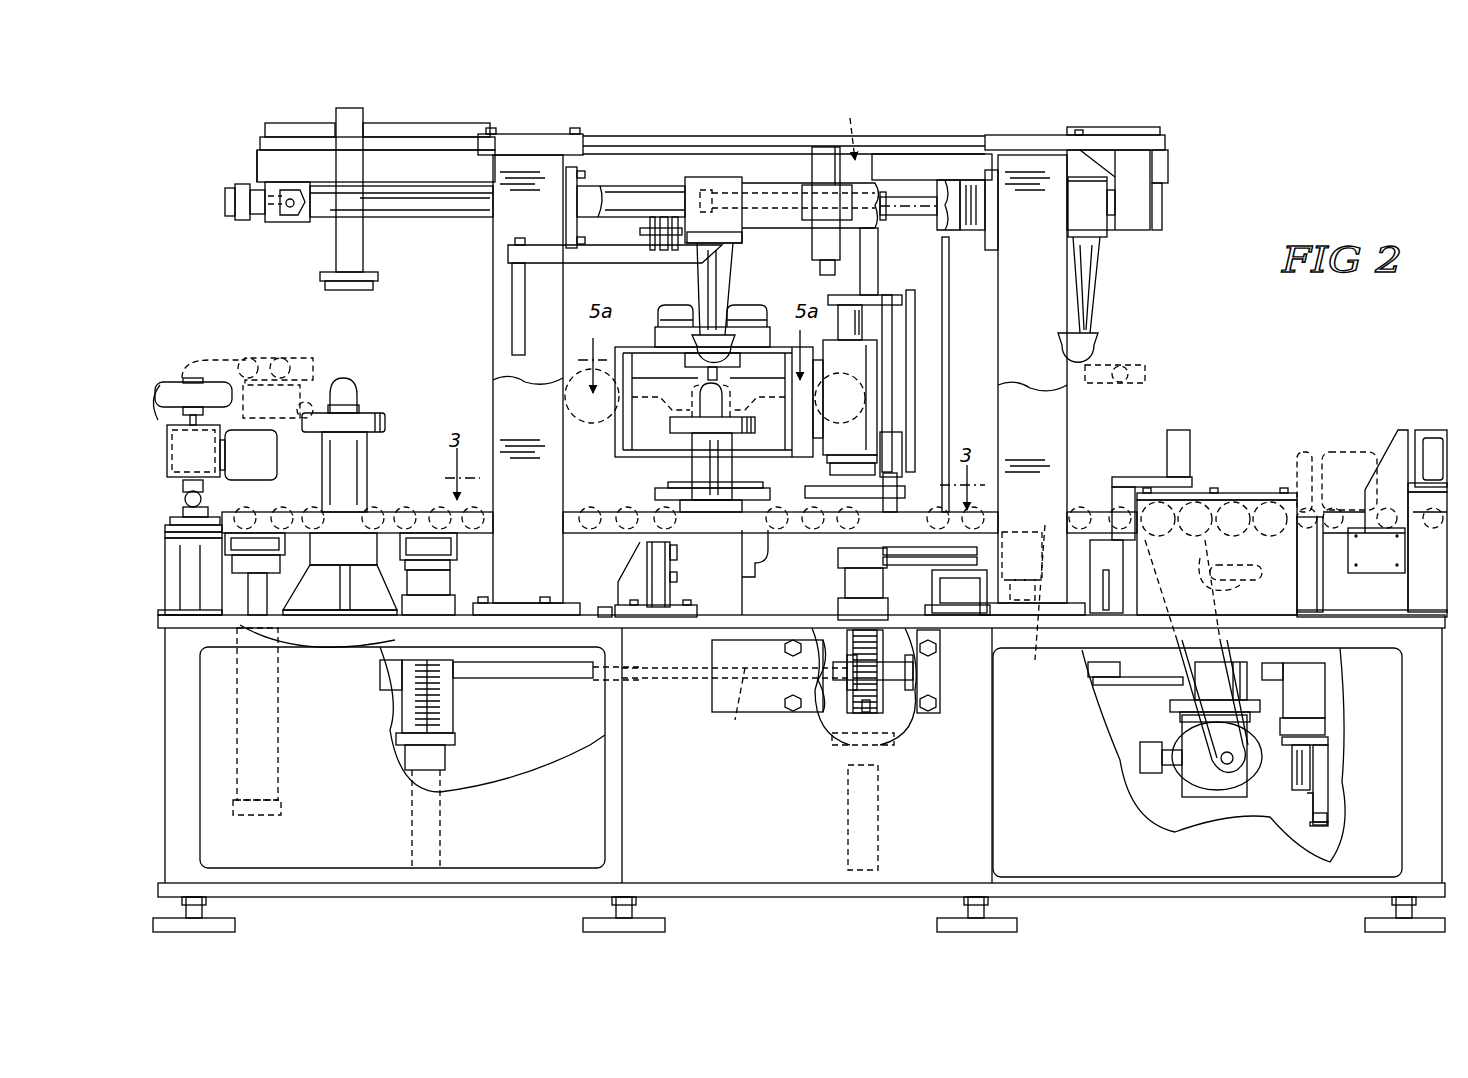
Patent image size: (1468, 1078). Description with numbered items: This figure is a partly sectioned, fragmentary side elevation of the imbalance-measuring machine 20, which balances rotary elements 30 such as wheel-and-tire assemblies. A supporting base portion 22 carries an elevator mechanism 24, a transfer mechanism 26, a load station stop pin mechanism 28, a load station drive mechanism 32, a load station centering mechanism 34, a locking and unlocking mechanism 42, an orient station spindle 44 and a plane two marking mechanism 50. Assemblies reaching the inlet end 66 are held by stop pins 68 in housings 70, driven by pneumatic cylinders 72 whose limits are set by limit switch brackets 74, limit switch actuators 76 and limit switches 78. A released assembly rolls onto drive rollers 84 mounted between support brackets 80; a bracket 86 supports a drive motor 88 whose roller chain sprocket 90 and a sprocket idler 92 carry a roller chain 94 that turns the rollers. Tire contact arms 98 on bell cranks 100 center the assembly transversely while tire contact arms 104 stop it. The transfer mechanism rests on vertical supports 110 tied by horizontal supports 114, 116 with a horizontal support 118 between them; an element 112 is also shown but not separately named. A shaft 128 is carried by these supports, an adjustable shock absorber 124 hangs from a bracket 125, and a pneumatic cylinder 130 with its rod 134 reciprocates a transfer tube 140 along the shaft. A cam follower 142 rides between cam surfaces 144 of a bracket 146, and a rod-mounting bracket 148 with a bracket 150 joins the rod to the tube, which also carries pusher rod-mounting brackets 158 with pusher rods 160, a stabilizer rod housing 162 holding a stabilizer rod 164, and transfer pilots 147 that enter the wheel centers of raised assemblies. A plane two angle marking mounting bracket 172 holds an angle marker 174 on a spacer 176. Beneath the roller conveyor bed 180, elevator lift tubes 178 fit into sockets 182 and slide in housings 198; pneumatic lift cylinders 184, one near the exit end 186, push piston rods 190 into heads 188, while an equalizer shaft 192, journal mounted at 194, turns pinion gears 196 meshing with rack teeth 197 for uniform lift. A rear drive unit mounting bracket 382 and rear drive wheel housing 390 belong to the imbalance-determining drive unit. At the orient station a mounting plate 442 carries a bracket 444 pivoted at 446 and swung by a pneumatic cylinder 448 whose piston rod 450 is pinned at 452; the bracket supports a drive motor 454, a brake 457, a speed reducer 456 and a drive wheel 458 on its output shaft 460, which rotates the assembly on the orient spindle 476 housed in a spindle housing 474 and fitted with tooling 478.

The imbalance-measuring machine 20 is at (1240, 143).
The supporting base portion 22 is at (712, 806).
The elevator mechanism 24 is at (537, 700).
The transfer mechanism 26 is at (872, 248).
The load station stop pin mechanism 28 is at (1295, 810).
The rotary elements 30 is at (605, 425).
The load station drive mechanism 32 is at (1152, 790).
The load station centering mechanism 34 is at (1096, 440).
The locking and unlocking mechanism 42 is at (730, 600).
The orient station spindle 44 is at (375, 368).
The plane two marking mechanism 50 is at (385, 243).
The inlet end 66 is at (1425, 492).
The stop pins 68 is at (1303, 452).
The housings 70 is at (1305, 597).
The pneumatic cylinders 72 is at (1320, 700).
The limit switch brackets 74 is at (1330, 798).
The limit switch actuators 76 is at (1307, 800).
The limit switches 78 is at (1322, 830).
The support bracket 80 is at (1190, 569).
The drive rollers 84 is at (1238, 508).
The bracket 86 is at (1195, 795).
The drive motor 88 is at (1180, 745).
The roller chain sprocket 90 is at (1228, 770).
The sprocket idler 92 is at (1225, 578).
The roller chain 94 is at (1175, 700).
The tire contact arms 98 is at (1187, 430).
The bell cranks 100 is at (1128, 477).
The tire contact arms 104 is at (902, 450).
The vertical supports 110 is at (538, 494).
The flange 112 is at (580, 195).
The entry end horizontal support 114 is at (1100, 127).
The exit end horizontal support 116 is at (535, 133).
The horizontal support 118 is at (780, 135).
The adjustable shock absorber 124 is at (245, 225).
The bracket 125 is at (405, 135).
The shaft 128 is at (455, 188).
The pneumatic cylinder 130 is at (922, 195).
The rod 134 is at (700, 178).
The transfer tube 140 is at (712, 176).
The cam follower 142 is at (975, 130).
The cam surfaces 144 is at (848, 128).
The bracket 146 is at (882, 150).
The transfer pilots 147 is at (718, 290).
The rod-mounting bracket 148 is at (655, 270).
The bracket 150 is at (640, 232).
The pusher rod-mounting brackets 158 is at (512, 250).
The pusher rods 160 is at (512, 318).
The stabilizer rod housing 162 is at (812, 212).
The stabilizer rod 164 is at (822, 270).
The plane two angle marking mounting bracket 172 is at (340, 112).
The plane two angle marker 174 is at (330, 255).
The angle marker spacer 176 is at (312, 210).
The elevator lift tubes 178 is at (455, 695).
The roller conveyor bed 180 is at (300, 358).
The socket 182 is at (470, 568).
The pneumatic lift cylinders 184 is at (275, 718).
The exit end 186 is at (243, 510).
The heads 188 is at (185, 560).
The piston rods 190 is at (240, 625).
The equalizer shaft 192 is at (580, 680).
The journal mount 194 is at (383, 677).
The pinion gears 196 is at (440, 708).
The rack teeth 197 is at (415, 720).
The housings 198 is at (450, 730).
The rear drive unit mounting bracket 382 is at (880, 355).
The rear drive wheel housing 390 is at (637, 348).
The mounting plate 442 is at (200, 538).
The bracket 444 is at (183, 483).
The pivot 446 is at (215, 528).
The pneumatic cylinder 448 is at (200, 520).
The piston rod 450 is at (192, 512).
The pivot 452 is at (186, 500).
The drive motor 454 is at (272, 458).
The speed reducer 456 is at (167, 440).
The brake 457 is at (235, 425).
The drive wheel 458 is at (162, 383).
The output shaft 460 is at (155, 395).
The spindle housing 474 is at (298, 605).
The orient spindle 476 is at (365, 405).
The tooling 478 is at (367, 472).